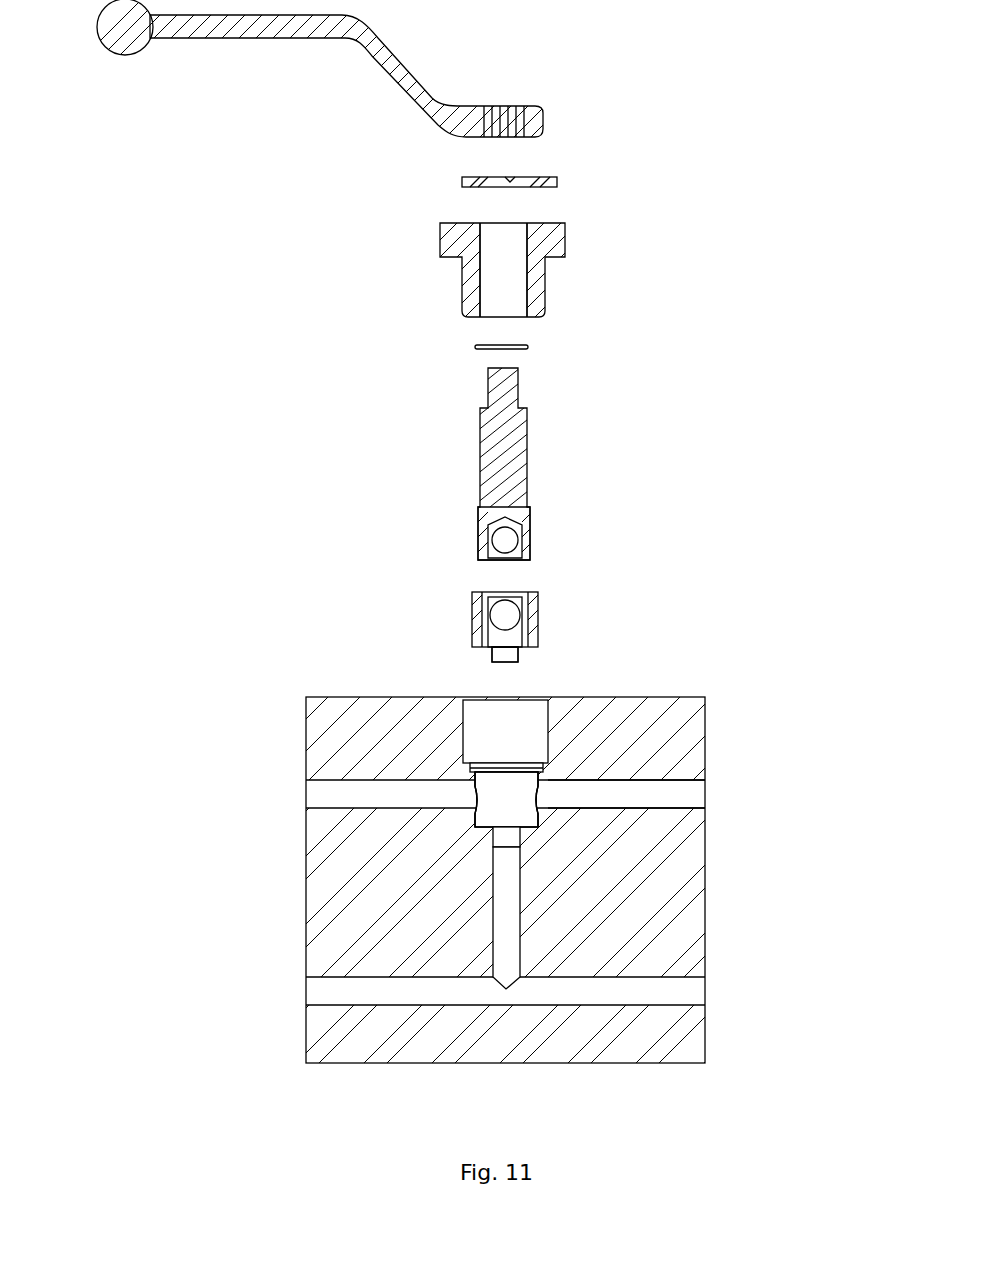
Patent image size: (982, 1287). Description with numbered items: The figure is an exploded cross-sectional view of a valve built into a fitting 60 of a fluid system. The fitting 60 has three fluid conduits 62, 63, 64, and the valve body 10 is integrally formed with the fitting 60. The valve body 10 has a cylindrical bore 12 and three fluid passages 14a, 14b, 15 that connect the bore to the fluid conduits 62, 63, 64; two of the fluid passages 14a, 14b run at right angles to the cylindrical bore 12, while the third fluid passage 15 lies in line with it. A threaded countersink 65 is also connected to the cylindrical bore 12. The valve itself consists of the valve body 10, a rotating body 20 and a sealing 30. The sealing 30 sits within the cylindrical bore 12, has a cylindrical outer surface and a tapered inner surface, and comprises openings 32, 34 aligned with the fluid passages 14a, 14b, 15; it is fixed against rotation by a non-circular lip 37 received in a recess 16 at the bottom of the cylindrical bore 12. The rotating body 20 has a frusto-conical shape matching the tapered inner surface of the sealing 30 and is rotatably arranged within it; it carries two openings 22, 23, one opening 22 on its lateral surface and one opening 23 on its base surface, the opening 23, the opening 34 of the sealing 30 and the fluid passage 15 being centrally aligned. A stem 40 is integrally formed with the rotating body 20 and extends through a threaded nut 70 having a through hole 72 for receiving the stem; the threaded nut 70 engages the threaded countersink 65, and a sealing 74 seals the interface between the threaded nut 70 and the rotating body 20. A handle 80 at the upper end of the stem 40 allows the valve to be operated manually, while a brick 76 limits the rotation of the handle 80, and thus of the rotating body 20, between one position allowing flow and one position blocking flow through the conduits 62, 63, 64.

The handle 80 is at (238, 27).
The brick 76 is at (550, 177).
The through hole 72 is at (508, 252).
The threaded nut 70 is at (535, 282).
The sealing 74 is at (530, 347).
The stem 40 is at (512, 450).
The rotating body 20 is at (530, 525).
The opening 22 is at (480, 532).
The opening 23 is at (490, 562).
The sealing 30 is at (538, 625).
The opening 32 is at (523, 603).
The lip 37 is at (507, 654).
The opening 34 is at (500, 664).
The fitting 60 is at (302, 725).
The fluid conduit 62 is at (332, 798).
The fluid conduit 64 is at (683, 800).
The fluid conduit 63 is at (333, 993).
The threaded countersink 65 is at (553, 748).
The valve body 10 is at (463, 823).
The cylindrical bore 12 is at (350, 827).
The fluid passage 14a is at (460, 797).
The fluid passage 14b is at (552, 797).
The recess 16 is at (527, 840).
The fluid passage 15 is at (504, 847).